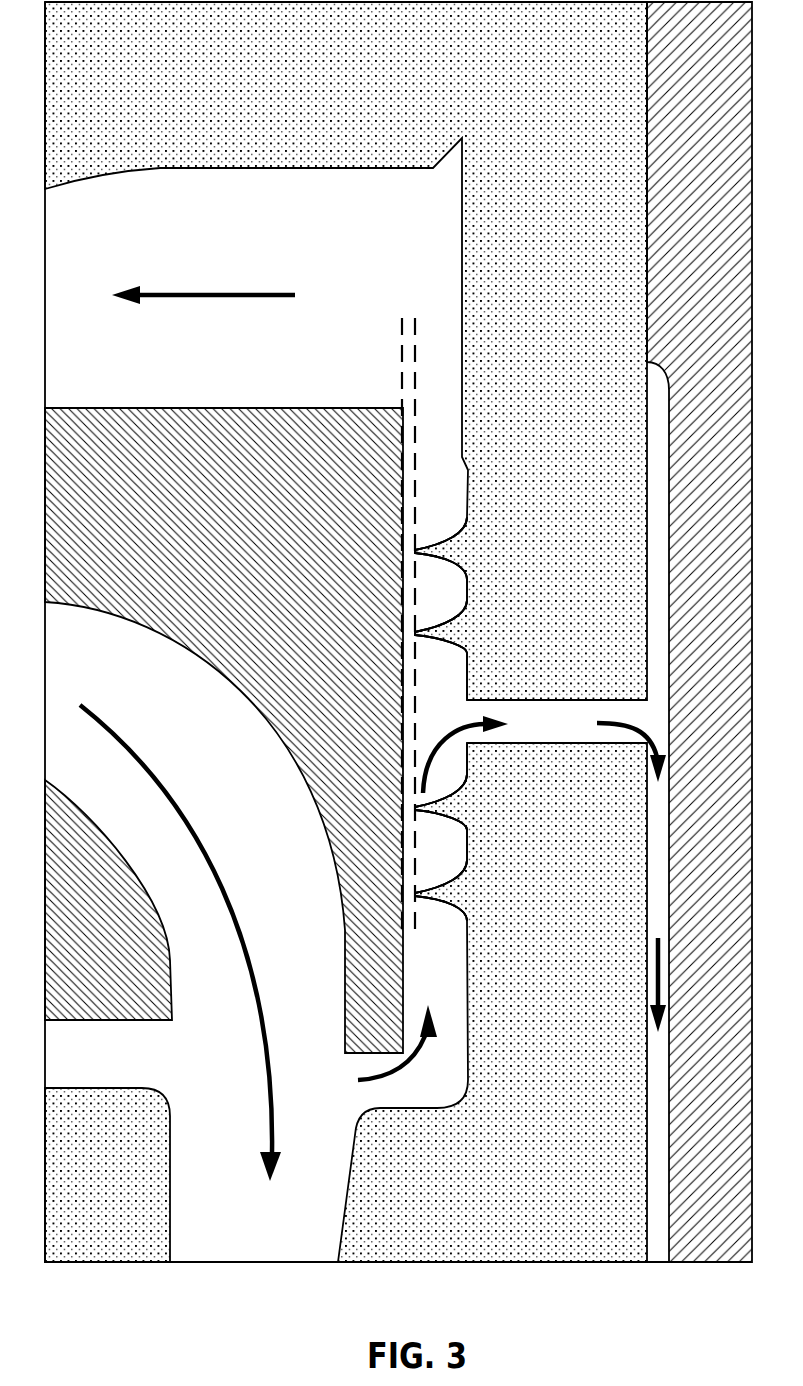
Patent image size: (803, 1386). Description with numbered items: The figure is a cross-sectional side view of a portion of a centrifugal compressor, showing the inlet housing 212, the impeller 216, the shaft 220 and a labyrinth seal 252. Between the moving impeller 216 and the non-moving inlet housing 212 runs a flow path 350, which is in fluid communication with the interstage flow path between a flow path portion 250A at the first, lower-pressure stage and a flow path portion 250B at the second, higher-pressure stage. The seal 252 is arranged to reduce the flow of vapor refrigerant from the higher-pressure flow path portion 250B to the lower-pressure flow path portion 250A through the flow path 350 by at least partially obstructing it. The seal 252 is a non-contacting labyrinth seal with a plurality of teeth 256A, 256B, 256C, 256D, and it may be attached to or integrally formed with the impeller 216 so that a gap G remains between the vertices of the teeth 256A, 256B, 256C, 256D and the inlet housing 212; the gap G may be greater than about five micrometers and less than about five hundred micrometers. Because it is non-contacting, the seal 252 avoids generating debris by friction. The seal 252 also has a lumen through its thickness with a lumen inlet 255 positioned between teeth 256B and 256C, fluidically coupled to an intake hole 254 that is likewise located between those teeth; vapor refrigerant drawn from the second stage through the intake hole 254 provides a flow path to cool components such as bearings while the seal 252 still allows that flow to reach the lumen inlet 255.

The inlet housing 212 is at (259, 533).
The impeller 216 is at (537, 239).
The shaft 220 is at (666, 206).
The flow path portion 250A is at (226, 293).
The flow path portion 250B is at (186, 822).
The labyrinth seal 252 is at (570, 490).
The intake hole 254 is at (547, 725).
The lumen inlet 255 is at (468, 715).
The tooth 256A is at (417, 894).
The tooth 256B is at (417, 809).
The tooth 256C is at (417, 635).
The tooth 256D is at (417, 552).
The flow path 350 is at (423, 1050).
The gap G is at (475, 355).